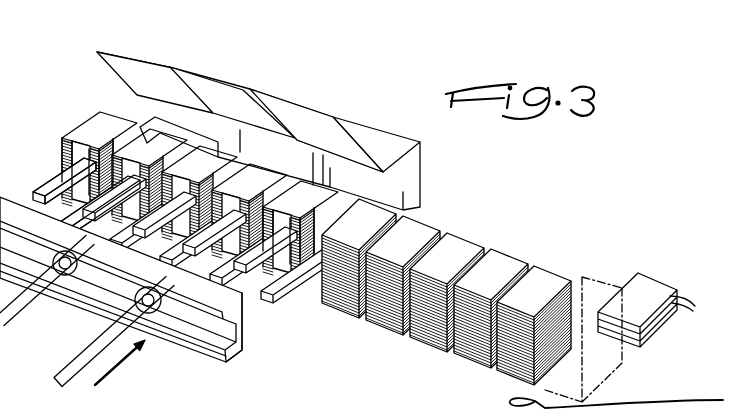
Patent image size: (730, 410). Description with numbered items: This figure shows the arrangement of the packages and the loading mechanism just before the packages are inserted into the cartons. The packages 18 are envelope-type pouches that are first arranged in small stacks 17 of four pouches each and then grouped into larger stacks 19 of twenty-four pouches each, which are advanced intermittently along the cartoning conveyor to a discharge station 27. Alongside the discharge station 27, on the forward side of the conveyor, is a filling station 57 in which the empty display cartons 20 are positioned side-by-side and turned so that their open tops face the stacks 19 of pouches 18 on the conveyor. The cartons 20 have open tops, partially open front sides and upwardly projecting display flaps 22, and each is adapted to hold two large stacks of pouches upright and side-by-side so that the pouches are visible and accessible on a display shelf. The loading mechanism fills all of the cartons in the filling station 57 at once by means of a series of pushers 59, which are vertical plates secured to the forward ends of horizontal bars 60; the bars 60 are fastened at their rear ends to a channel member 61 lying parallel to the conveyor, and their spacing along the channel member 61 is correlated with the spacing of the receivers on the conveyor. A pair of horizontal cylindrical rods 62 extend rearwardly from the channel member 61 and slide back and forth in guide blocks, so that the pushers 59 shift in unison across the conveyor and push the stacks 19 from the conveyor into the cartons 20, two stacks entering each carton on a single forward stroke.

The small stacks 17 is at (668, 281).
The packages 18 is at (680, 309).
The larger stacks 19 is at (477, 235).
The display cartons 20 is at (193, 72).
The display flaps 22 is at (104, 57).
The discharge station 27 is at (78, 107).
The filling station 57 is at (293, 68).
The pushers 59 is at (75, 154).
The horizontal bars 60 is at (55, 183).
The channel member 61 is at (208, 343).
The horizontal cylindrical rods 62 is at (38, 350).